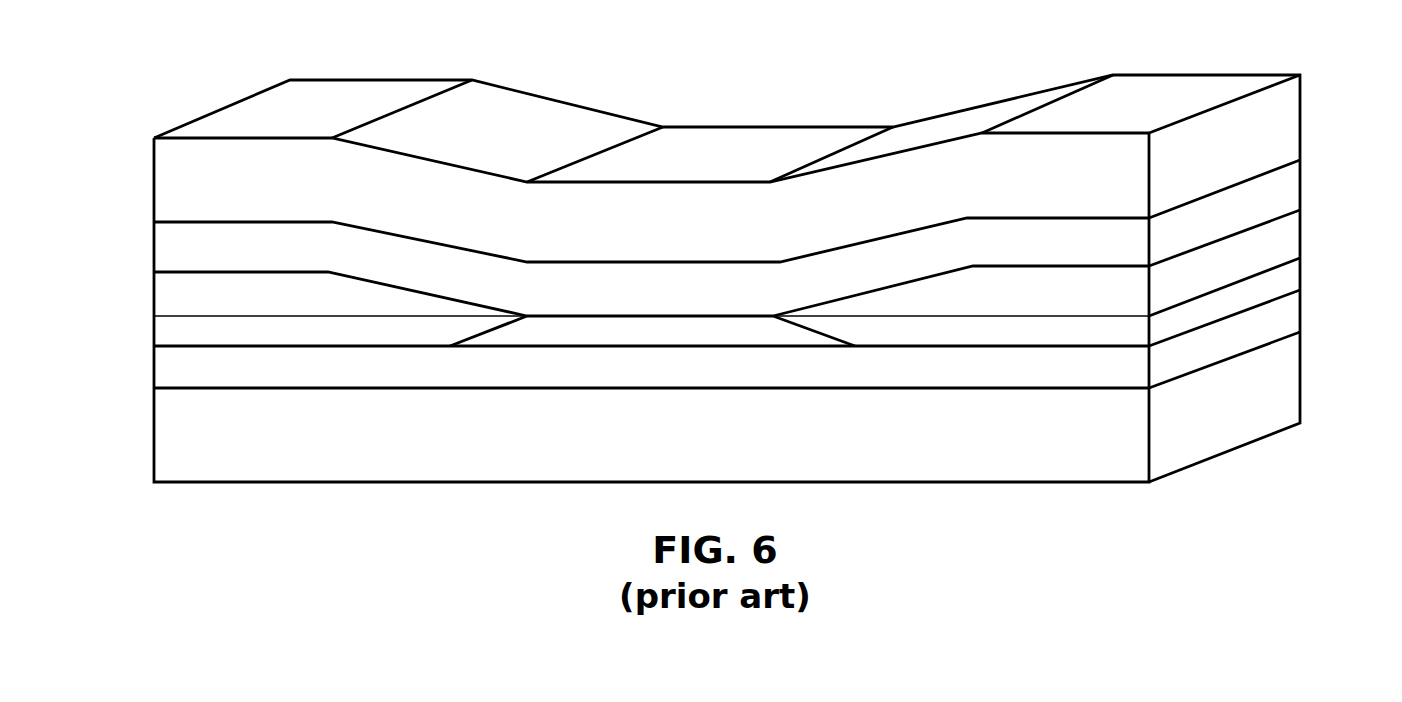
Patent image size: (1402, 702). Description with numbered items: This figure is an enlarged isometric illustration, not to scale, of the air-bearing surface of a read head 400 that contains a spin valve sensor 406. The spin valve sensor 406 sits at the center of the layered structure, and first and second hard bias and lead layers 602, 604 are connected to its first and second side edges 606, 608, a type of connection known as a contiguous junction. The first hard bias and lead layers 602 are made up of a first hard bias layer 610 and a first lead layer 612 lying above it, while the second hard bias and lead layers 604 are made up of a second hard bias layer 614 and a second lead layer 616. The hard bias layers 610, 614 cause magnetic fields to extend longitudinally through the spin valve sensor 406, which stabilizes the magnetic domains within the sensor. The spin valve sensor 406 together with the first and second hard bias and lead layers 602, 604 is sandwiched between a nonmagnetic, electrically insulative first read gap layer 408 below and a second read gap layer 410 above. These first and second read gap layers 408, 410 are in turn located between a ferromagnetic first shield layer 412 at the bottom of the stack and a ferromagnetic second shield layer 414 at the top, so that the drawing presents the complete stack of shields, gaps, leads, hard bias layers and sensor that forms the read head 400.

The read head 400 is at (807, 82).
The spin valve sensor 406 is at (558, 314).
The first read gap layer 408 is at (1017, 370).
The second read gap layer 410 is at (392, 252).
The first shield layer 412 is at (315, 485).
The second shield layer 414 is at (575, 117).
The first hard bias and lead layers 602 is at (149, 270).
The second hard bias and lead layers 604 is at (1307, 210).
The first side edge 606 is at (480, 333).
The second side edge 608 is at (837, 333).
The first hard bias layer 610 is at (187, 330).
The first lead layer 612 is at (193, 292).
The second hard bias layer 614 is at (1090, 323).
The second lead layer 616 is at (1098, 287).